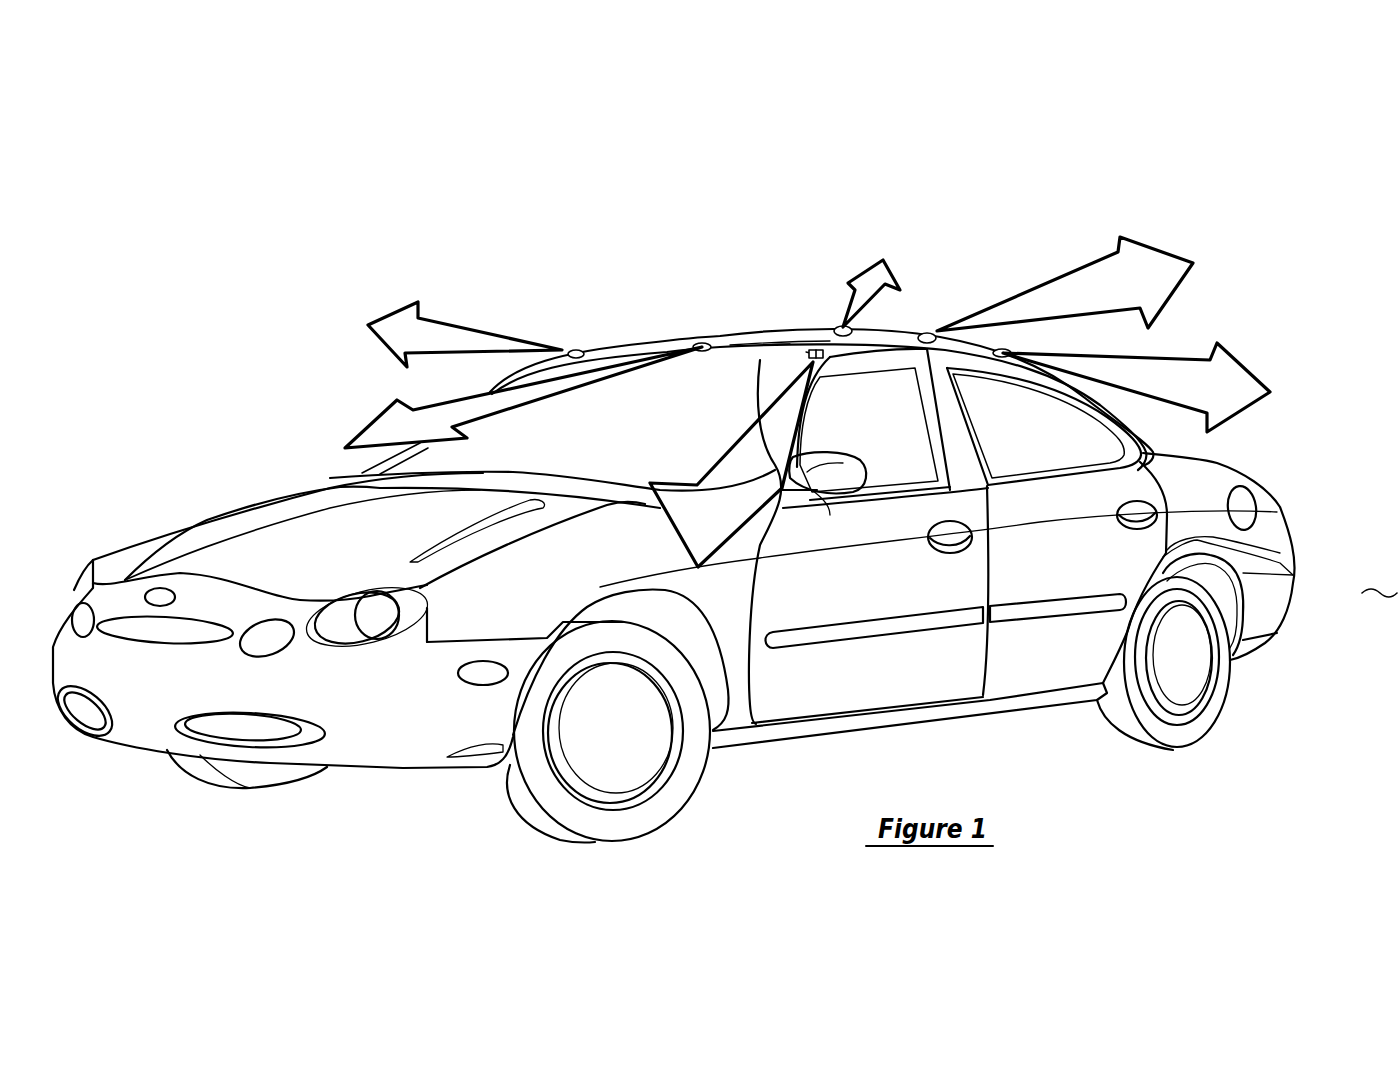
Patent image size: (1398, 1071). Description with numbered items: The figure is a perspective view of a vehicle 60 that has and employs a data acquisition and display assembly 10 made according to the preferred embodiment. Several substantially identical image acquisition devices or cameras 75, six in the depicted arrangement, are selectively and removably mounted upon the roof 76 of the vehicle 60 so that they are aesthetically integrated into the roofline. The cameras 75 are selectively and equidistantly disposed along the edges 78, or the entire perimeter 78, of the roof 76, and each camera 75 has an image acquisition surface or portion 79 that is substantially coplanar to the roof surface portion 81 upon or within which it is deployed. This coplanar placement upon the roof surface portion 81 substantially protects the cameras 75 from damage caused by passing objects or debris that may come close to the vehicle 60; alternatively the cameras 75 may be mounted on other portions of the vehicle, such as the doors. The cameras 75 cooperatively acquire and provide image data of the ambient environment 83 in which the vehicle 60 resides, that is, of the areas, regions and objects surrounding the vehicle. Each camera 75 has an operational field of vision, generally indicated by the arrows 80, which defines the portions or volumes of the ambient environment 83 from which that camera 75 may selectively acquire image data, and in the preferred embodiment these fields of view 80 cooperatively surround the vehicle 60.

The vehicle 10 is at (909, 173).
The vehicle 60 is at (1273, 514).
The cameras 75 is at (574, 349).
The roof 76 is at (778, 343).
The edges of the roof 78 is at (830, 515).
The image acquisition surface 79 is at (817, 350).
The arrows indicating field of view 80 is at (463, 320).
The roof surface portion 81 is at (747, 343).
The ambient environment 83 is at (1379, 579).